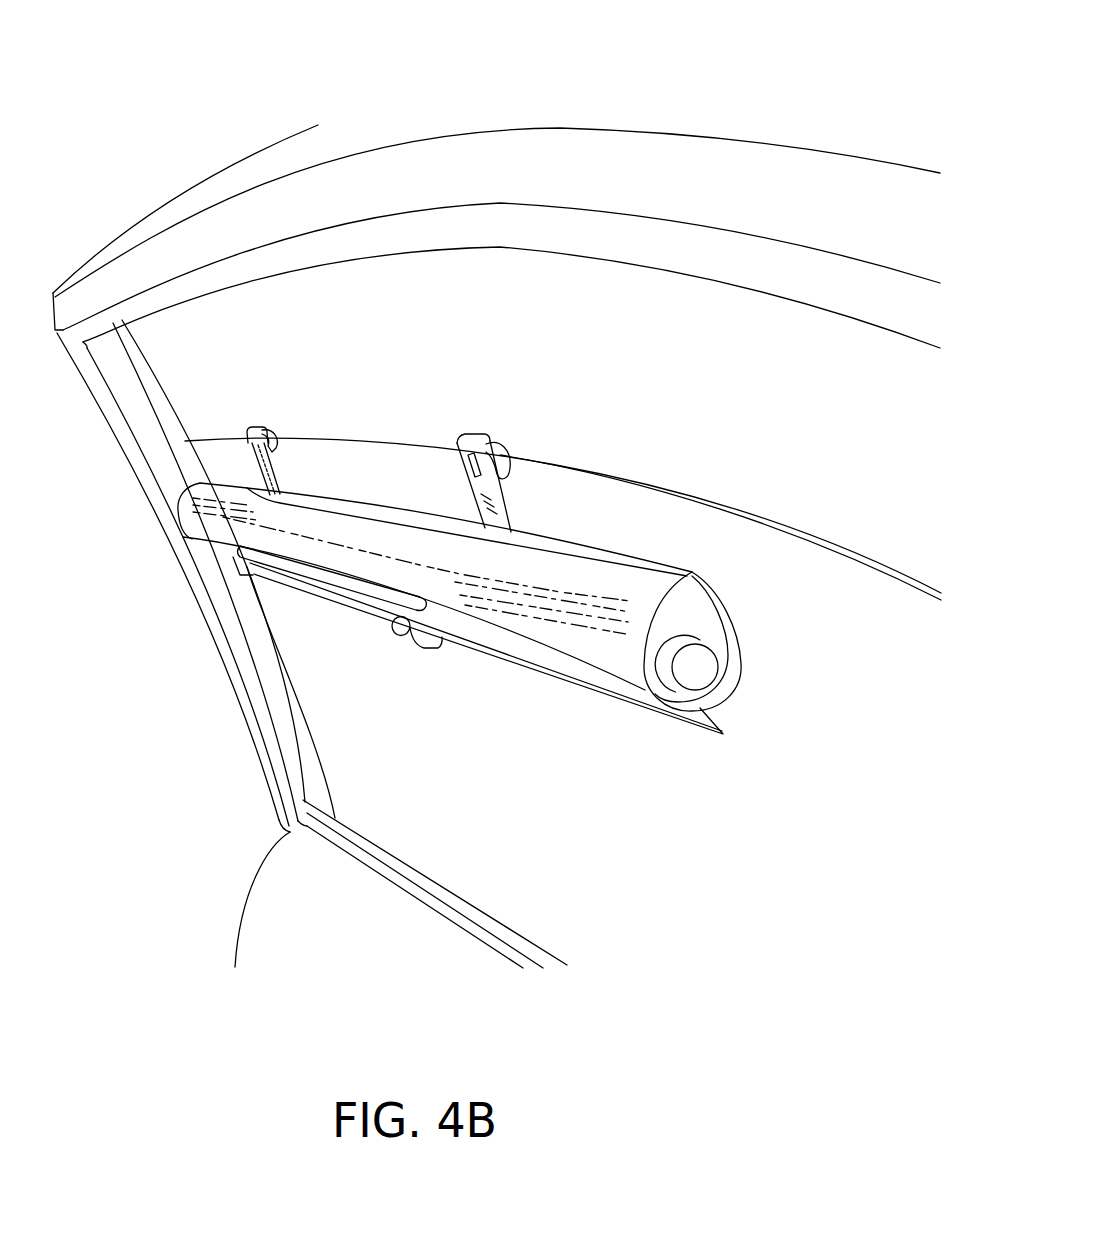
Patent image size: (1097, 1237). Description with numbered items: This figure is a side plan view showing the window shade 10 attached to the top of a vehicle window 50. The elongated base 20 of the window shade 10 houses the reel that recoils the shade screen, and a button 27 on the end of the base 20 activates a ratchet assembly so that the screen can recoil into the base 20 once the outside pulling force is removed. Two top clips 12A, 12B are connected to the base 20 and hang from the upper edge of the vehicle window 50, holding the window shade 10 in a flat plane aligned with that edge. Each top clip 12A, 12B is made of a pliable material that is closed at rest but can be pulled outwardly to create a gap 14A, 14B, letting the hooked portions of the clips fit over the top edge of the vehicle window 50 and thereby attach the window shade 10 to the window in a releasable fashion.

The window shade 10 is at (214, 64).
The top clip 12A is at (252, 428).
The top clip 12B is at (480, 433).
The gap 14A is at (274, 433).
The gap 14B is at (510, 442).
The base 20 is at (630, 647).
The button 27 is at (706, 668).
The vehicle window 50 is at (770, 550).